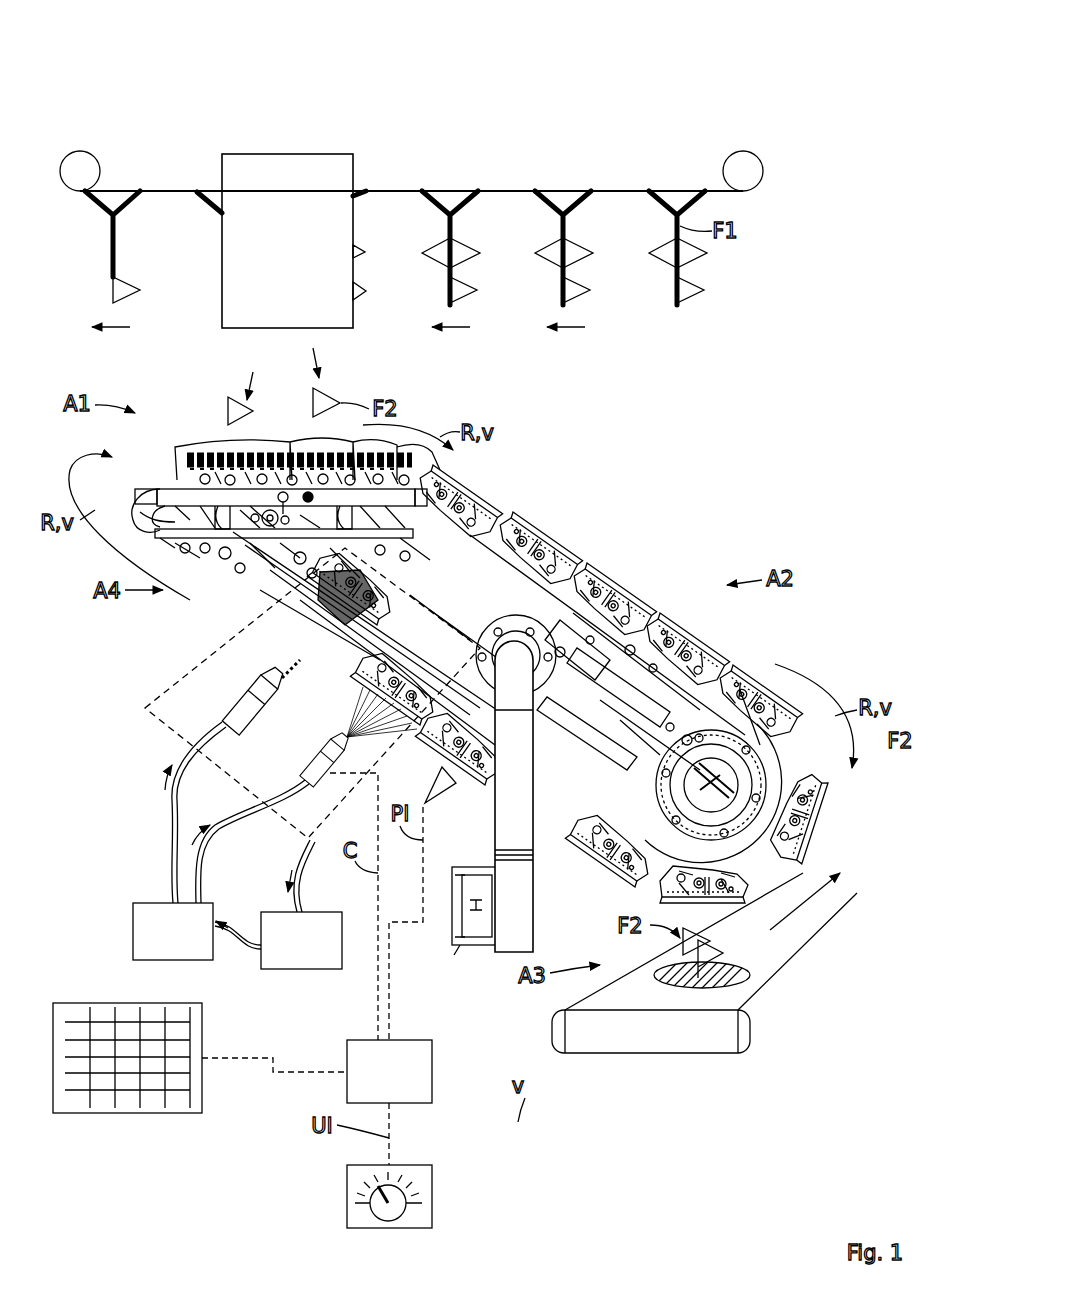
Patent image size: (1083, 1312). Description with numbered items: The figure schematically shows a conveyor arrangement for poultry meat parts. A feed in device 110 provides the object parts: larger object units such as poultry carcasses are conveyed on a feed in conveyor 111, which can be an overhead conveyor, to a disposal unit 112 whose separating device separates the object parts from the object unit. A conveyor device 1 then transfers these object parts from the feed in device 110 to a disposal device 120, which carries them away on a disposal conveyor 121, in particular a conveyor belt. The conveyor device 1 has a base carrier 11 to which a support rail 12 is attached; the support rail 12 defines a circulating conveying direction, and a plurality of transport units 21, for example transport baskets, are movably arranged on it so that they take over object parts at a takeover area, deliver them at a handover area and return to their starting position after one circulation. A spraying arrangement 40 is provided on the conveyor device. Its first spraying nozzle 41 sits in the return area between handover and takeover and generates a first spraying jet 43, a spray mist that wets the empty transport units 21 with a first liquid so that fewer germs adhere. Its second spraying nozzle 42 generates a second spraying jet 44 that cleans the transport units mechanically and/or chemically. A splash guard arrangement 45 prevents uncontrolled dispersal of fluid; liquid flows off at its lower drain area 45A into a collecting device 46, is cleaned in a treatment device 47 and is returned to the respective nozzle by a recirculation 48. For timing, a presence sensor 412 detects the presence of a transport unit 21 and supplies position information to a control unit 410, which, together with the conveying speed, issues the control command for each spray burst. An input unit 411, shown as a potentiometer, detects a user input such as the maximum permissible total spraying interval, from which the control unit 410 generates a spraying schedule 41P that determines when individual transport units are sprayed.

The conveyor device 1 is at (818, 500).
The base carrier 11 is at (500, 828).
The support rail 12 is at (240, 562).
The transport unit 21 is at (548, 517).
The spraying arrangement 40 is at (88, 618).
The first spraying nozzle 41 is at (310, 766).
The spraying schedule 41P is at (65, 1003).
The second spraying nozzle 42 is at (222, 715).
The first spraying jet 43 is at (358, 710).
The second spraying jet 44 is at (297, 663).
The splash guard arrangement 45 is at (145, 708).
The lower drain area 45A is at (310, 838).
The collecting device 46 is at (291, 952).
The treatment device 47 is at (162, 945).
The recirculation 48 is at (243, 812).
The feed in device 110 is at (724, 112).
The feed in conveyor 111 is at (505, 178).
The disposal unit 112 is at (293, 154).
The disposal device 120 is at (860, 967).
The disposal conveyor 121 is at (830, 917).
The control unit 410 is at (427, 1040).
The input unit 411 is at (347, 1202).
The presence sensor 412 is at (448, 787).